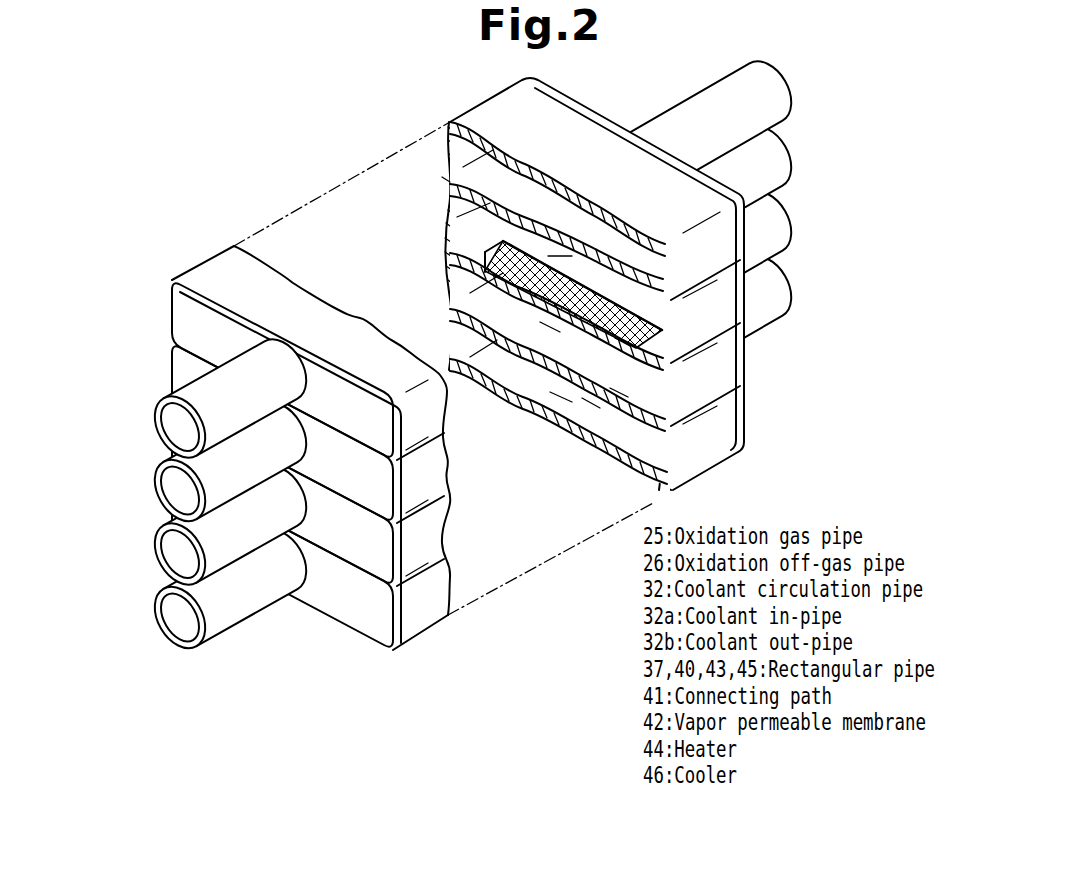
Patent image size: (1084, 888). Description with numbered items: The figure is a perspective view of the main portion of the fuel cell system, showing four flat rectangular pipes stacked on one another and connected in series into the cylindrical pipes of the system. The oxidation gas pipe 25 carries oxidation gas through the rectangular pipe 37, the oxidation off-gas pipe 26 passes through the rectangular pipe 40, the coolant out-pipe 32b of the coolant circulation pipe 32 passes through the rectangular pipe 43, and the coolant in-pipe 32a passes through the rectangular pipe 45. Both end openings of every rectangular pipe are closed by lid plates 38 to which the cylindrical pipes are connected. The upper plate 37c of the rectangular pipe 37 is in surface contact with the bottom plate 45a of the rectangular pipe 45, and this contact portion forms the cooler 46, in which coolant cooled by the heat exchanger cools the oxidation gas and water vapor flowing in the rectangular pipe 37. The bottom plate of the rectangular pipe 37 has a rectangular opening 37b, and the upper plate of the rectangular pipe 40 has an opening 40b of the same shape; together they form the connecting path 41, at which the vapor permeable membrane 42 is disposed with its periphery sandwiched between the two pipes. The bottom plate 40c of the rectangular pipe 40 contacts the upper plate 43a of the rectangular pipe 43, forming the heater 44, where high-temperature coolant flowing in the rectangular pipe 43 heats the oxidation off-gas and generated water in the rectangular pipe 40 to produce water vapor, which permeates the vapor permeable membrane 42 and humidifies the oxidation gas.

The oxidation gas pipe 25 is at (158, 485).
The oxidation off-gas pipe 26 is at (158, 550).
The coolant circulation pipe 32 is at (680, 92).
The coolant in-pipe 32a is at (158, 420).
The coolant out-pipe 32b is at (158, 613).
The rectangular pipe 37 is at (742, 293).
The opening 37b is at (485, 252).
The upper plate 37c is at (560, 258).
The lid plates 38 is at (172, 316).
The rectangular pipe 40 is at (724, 361).
The opening 40b is at (615, 353).
The bottom plate 40c is at (618, 392).
The connecting path 41 is at (552, 340).
The vapor permeable membrane 42 is at (555, 285).
The rectangular pipe 43 is at (716, 460).
The upper plate 43a is at (560, 400).
The heater 44 is at (590, 410).
The rectangular pipe 45 is at (497, 107).
The bottom plate 45a is at (530, 188).
The cooler 46 is at (440, 177).